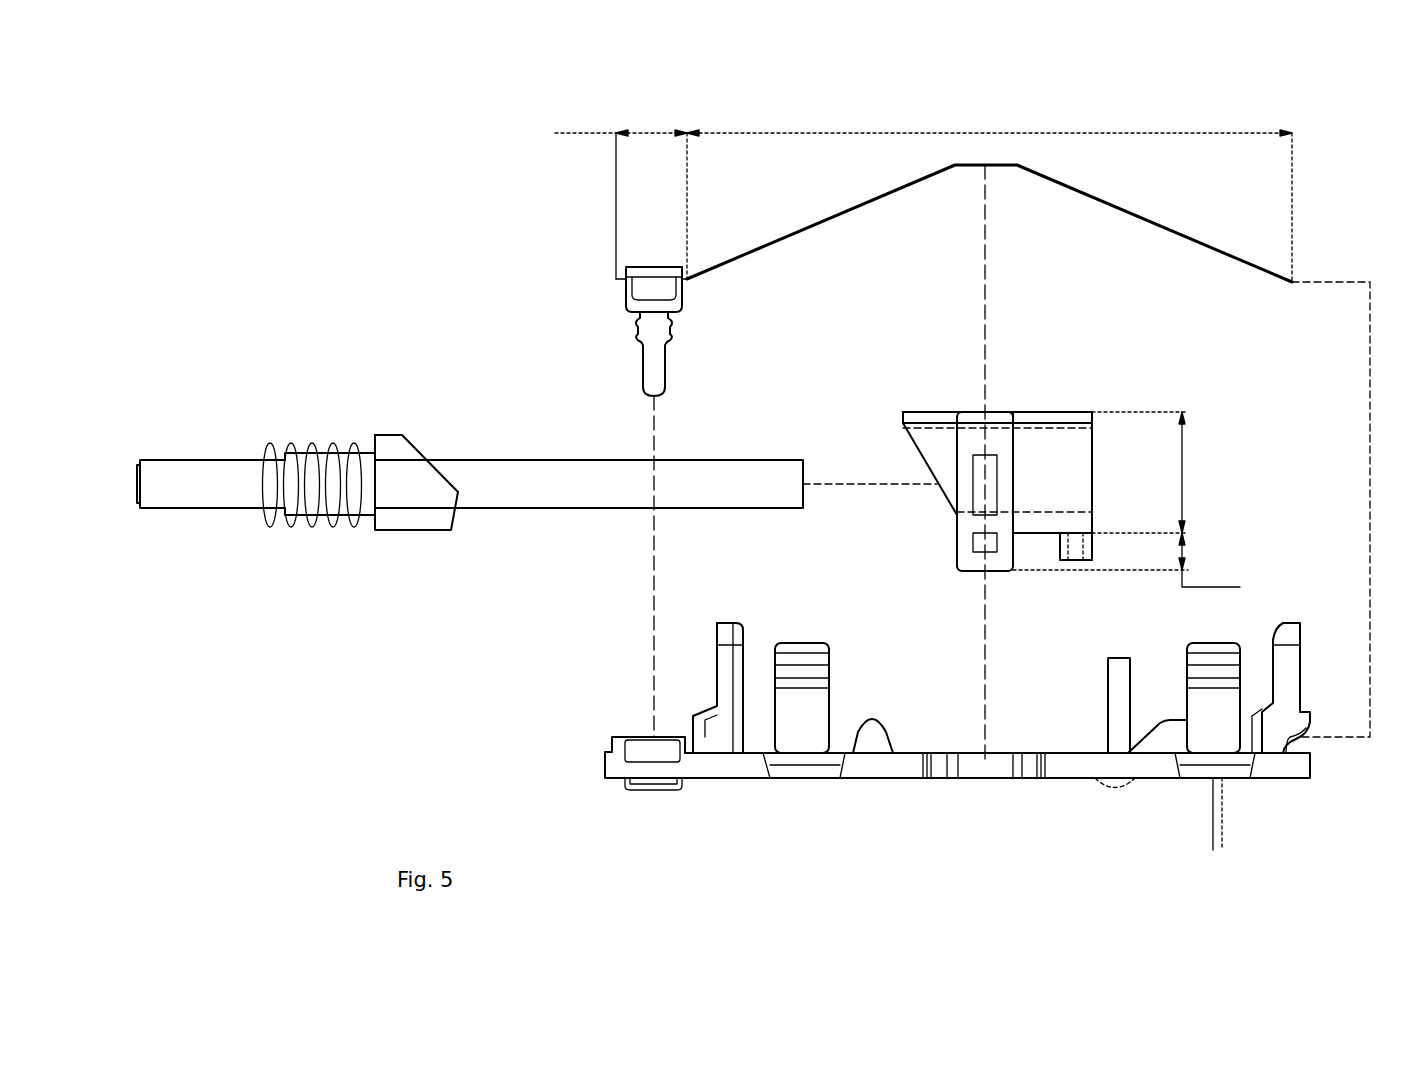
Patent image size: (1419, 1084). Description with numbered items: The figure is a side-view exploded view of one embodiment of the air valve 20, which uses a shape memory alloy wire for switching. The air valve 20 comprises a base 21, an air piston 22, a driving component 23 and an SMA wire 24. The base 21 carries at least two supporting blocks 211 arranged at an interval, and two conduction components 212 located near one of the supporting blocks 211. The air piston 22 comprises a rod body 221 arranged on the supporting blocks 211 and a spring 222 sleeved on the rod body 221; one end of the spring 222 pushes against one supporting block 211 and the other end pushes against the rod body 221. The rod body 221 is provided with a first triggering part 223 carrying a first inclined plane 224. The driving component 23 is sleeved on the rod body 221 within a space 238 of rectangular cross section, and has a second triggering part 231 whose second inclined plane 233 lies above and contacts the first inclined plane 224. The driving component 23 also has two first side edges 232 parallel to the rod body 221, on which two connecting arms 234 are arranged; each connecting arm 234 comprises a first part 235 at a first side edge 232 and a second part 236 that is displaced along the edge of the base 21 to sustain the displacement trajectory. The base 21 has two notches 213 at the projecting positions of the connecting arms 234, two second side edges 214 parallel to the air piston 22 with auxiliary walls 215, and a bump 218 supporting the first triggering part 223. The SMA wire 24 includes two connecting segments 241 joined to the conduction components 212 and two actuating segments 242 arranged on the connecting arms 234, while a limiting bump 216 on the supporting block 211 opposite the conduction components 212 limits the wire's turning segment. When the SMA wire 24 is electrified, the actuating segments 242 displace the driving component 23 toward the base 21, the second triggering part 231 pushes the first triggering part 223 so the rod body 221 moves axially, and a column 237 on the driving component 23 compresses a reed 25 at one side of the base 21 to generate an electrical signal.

The air valve 20 is at (306, 164).
The base 21 is at (730, 780).
The supporting blocks 211 is at (725, 668).
The conduction components 212 is at (653, 358).
The notches 213 is at (972, 765).
The second side edges 214 is at (1063, 767).
The auxiliary walls 215 is at (800, 695).
The limiting bump 216 is at (1305, 712).
The bump 218 is at (870, 725).
The air piston 22 is at (207, 510).
The rod body 221 is at (532, 508).
The spring 222 is at (327, 523).
The first triggering part 223 is at (382, 436).
The first inclined plane 224 is at (417, 452).
The driving component 23 is at (1029, 410).
The second triggering part 231 is at (913, 452).
The first side edges 232 is at (1060, 448).
The second inclined plane 233 is at (997, 417).
The connecting arms 234 is at (966, 437).
The first part 235 is at (1147, 472).
The second part 236 is at (1126, 560).
The column 237 is at (1080, 560).
The space 238 is at (1033, 530).
The SMA wire 24 is at (1190, 236).
The connecting segments 241 is at (621, 194).
The actuating segments 242 is at (989, 196).
The reed 25 is at (1230, 812).